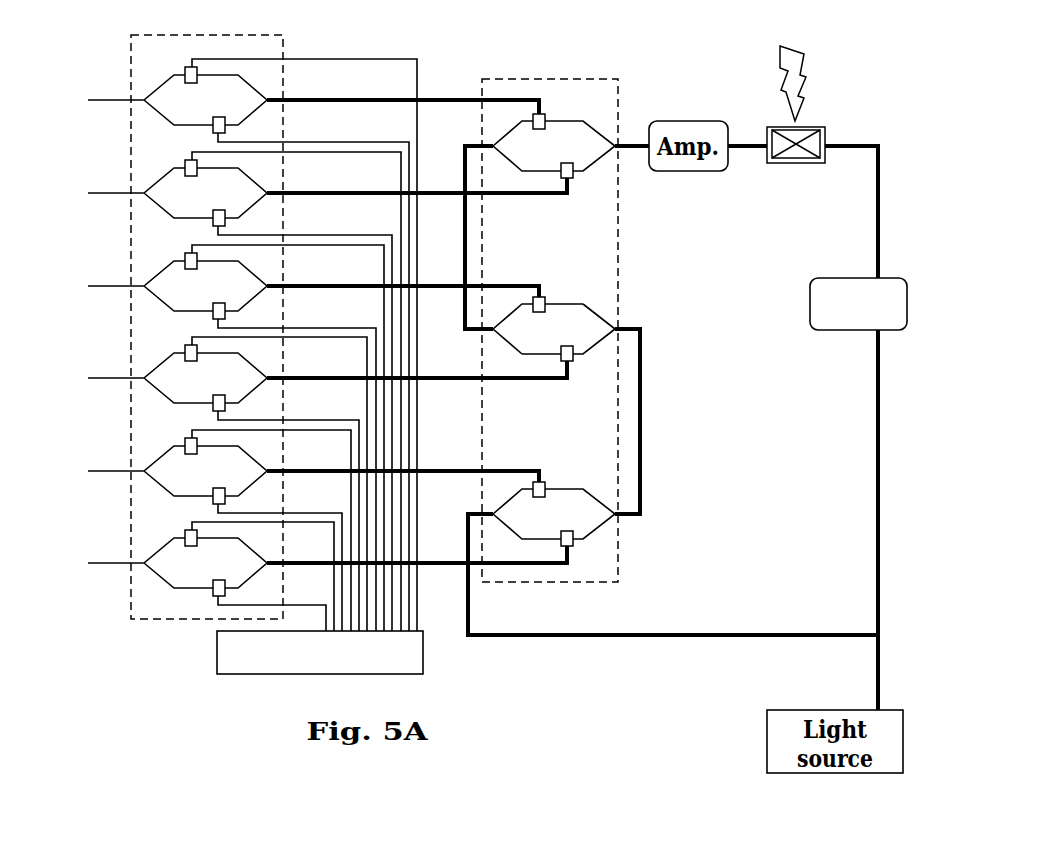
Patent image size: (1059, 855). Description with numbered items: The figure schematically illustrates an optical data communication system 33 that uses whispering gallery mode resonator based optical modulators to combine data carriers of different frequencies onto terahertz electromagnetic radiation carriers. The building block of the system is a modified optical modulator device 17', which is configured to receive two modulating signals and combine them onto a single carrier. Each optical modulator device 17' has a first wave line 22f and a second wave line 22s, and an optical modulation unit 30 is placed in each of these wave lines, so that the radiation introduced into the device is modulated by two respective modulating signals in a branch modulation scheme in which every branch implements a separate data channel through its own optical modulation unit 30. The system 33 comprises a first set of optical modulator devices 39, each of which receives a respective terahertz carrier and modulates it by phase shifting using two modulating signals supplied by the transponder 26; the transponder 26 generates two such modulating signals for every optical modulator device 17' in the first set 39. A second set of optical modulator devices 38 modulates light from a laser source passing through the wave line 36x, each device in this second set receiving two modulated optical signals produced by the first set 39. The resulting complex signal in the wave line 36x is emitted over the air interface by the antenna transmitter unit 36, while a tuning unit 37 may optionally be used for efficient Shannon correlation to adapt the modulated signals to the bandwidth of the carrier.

The optical modulator device 17' is at (343, 345).
The first wave line 22f is at (597, 316).
The second wave line 22s is at (508, 345).
The transponder 26 is at (423, 652).
The optical modulation unit 30 is at (541, 298).
The optical data communication system 33 is at (758, 458).
The antenna transmitter unit 36 is at (797, 163).
The wave line 36x is at (761, 635).
The tuning unit 37 is at (827, 330).
The second set of optical modulator devices 38 is at (618, 533).
The first set of optical modulator devices 39 is at (153, 620).